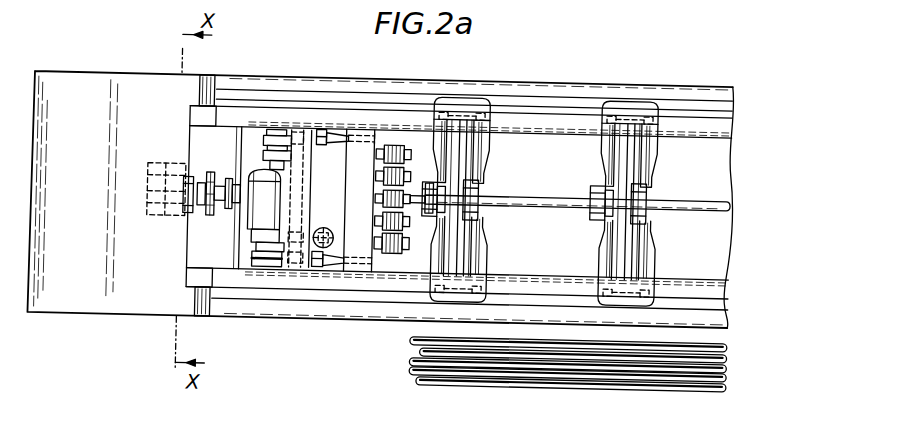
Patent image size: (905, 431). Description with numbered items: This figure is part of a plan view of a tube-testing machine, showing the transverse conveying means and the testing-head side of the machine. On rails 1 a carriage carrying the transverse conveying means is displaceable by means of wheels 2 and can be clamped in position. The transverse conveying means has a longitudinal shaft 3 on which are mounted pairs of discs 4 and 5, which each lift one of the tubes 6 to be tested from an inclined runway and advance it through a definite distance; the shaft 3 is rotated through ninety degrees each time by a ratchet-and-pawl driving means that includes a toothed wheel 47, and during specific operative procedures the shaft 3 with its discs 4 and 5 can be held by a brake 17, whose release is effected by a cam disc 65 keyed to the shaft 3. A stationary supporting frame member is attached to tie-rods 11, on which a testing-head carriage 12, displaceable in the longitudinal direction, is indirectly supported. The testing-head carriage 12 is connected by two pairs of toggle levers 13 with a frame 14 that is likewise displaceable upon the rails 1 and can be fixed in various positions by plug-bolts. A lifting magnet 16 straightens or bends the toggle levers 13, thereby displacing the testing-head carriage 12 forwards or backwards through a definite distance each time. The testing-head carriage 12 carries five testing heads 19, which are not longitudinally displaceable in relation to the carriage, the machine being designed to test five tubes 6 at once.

The rails 1 is at (555, 103).
The wheels 2 is at (466, 87).
The longitudinal shaft 3 is at (548, 186).
The disc 4 is at (616, 237).
The disc 5 is at (643, 241).
The tubes 6 is at (567, 350).
The tie-rods 11 is at (692, 75).
The testing-head carriage 12 is at (366, 122).
The toggle levers 13 is at (324, 122).
The frame 14 is at (313, 157).
The lifting magnet 16 is at (329, 220).
The brake 17 is at (192, 226).
The testing heads 19 is at (397, 224).
The toothed wheel 47 is at (170, 160).
The cam disc 65 is at (215, 174).